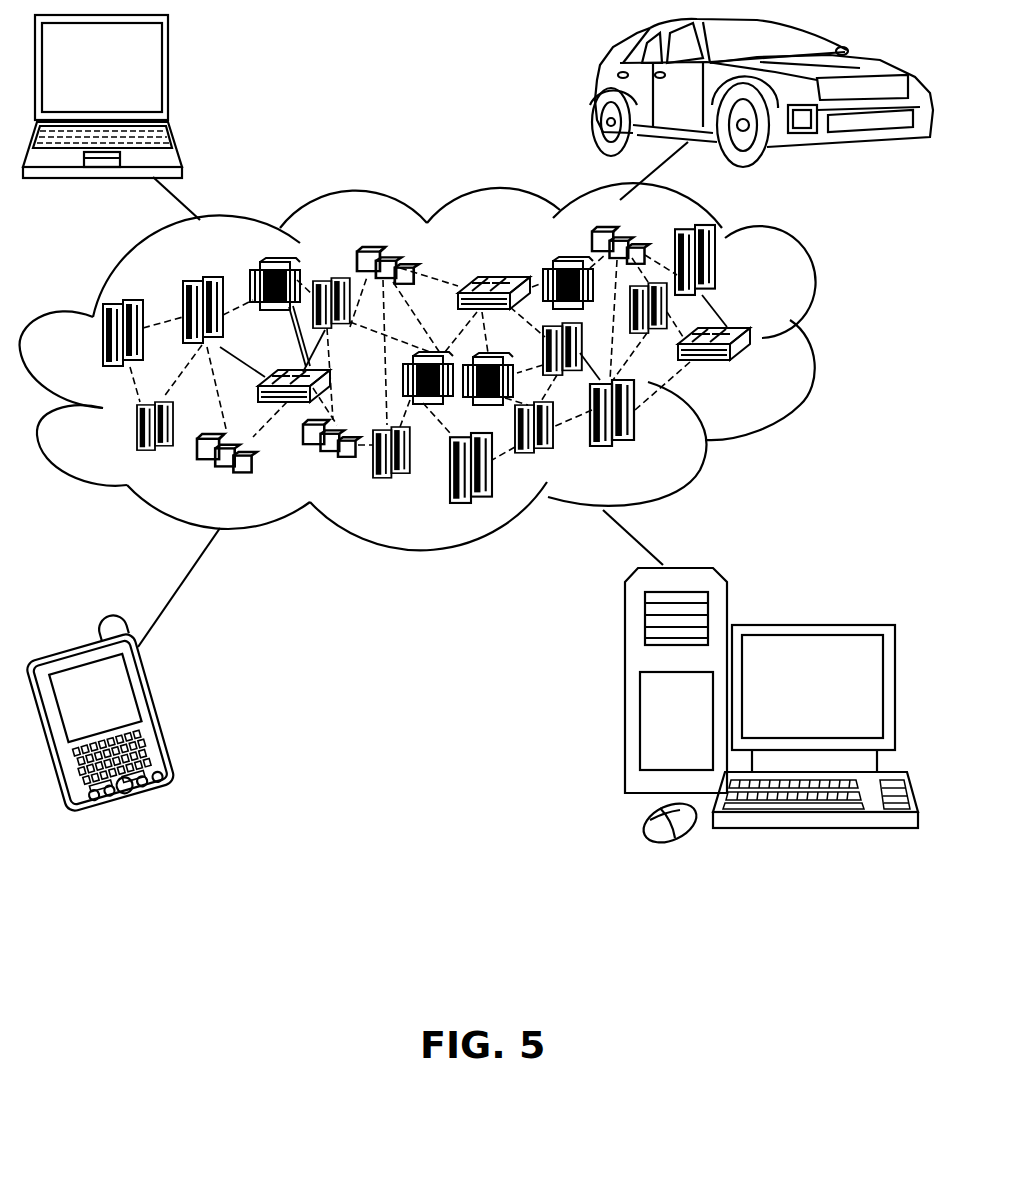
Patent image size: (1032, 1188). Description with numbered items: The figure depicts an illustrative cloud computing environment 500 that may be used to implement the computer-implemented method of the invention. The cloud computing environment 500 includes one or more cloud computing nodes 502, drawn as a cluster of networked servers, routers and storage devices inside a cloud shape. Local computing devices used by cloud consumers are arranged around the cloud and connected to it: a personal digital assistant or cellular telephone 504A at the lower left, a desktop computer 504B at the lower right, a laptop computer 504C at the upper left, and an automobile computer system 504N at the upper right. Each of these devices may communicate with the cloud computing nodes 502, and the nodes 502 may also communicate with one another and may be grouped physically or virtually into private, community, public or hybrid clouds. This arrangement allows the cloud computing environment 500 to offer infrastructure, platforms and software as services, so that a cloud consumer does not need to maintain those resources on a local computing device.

The cloud computing environment 500 is at (813, 342).
The cloud computing nodes 502 is at (758, 374).
The personal digital assistant (PDA) or cellular telephone 504A is at (160, 717).
The desktop computer 504B is at (810, 624).
The laptop computer 504C is at (170, 79).
The automobile computer system 504N is at (598, 97).